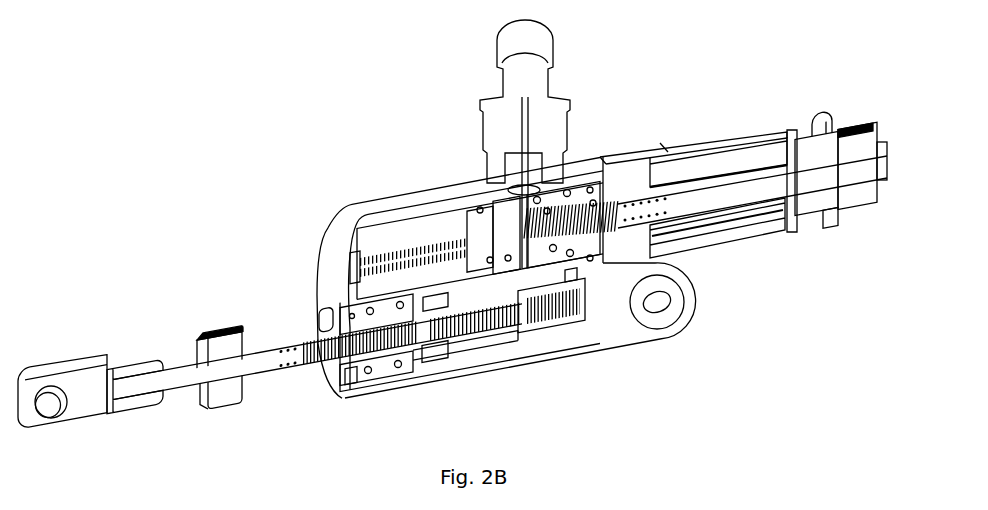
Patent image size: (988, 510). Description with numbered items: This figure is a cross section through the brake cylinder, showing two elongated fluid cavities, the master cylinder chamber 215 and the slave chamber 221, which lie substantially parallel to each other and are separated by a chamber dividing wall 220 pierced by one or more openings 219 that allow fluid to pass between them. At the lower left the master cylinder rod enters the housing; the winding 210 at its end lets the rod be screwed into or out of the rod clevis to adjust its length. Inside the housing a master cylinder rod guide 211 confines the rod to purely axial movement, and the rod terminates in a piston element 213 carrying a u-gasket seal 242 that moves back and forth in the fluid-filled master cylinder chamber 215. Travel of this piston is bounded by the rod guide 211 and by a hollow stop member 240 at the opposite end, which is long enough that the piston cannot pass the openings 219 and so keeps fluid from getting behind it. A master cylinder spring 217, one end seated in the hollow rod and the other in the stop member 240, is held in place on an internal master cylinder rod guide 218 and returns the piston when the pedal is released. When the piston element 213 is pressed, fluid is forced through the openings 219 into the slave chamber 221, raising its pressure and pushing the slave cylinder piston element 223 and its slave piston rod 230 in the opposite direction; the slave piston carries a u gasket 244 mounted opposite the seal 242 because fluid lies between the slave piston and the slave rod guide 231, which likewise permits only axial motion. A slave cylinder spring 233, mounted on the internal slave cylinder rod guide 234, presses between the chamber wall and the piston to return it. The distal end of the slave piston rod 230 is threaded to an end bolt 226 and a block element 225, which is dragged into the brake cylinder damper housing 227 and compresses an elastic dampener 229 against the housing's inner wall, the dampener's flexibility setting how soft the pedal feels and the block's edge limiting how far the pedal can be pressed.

The winding 210 is at (137, 373).
The master cylinder rod guide 211 is at (363, 378).
The piston element 213 is at (420, 363).
The master cylinder chamber 215 is at (497, 343).
The master cylinder spring 217 is at (508, 330).
The internal master cylinder rod guide 218 is at (587, 312).
The openings 219 is at (543, 275).
The chamber dividing wall 220 is at (390, 301).
The slave chamber 221 is at (407, 232).
The slave cylinder piston element 223 is at (492, 220).
The block element 225 is at (822, 150).
The end bolt 226 is at (850, 192).
The brake cylinder damper housing 227 is at (739, 140).
The dampener 229 is at (767, 213).
The slave piston rod 230 is at (703, 195).
The slave rod guide 231 is at (600, 173).
The slave cylinder spring 233 is at (370, 256).
The internal slave cylinder rod guide 234 is at (352, 268).
The stop member 240 is at (547, 323).
The seal 242 is at (432, 348).
The u gasket 244 is at (526, 183).